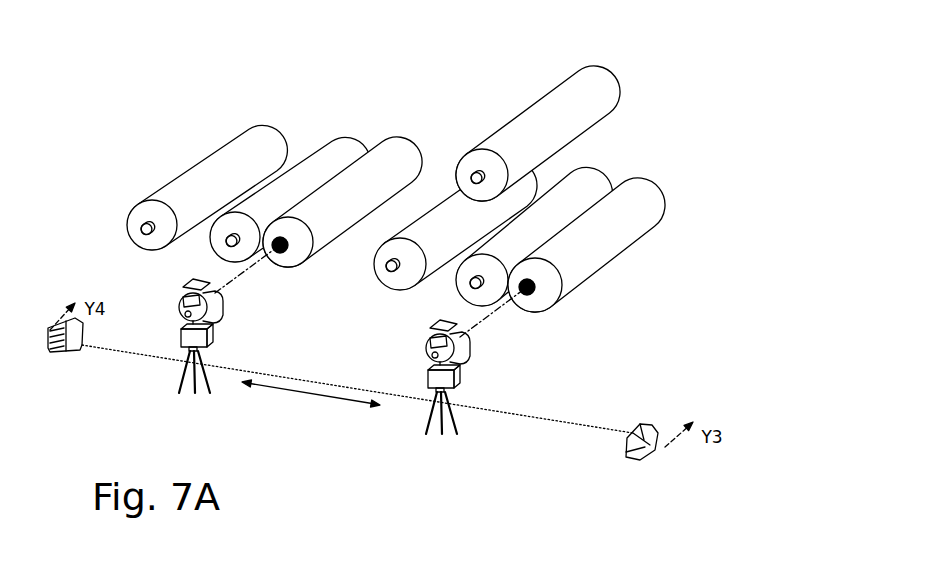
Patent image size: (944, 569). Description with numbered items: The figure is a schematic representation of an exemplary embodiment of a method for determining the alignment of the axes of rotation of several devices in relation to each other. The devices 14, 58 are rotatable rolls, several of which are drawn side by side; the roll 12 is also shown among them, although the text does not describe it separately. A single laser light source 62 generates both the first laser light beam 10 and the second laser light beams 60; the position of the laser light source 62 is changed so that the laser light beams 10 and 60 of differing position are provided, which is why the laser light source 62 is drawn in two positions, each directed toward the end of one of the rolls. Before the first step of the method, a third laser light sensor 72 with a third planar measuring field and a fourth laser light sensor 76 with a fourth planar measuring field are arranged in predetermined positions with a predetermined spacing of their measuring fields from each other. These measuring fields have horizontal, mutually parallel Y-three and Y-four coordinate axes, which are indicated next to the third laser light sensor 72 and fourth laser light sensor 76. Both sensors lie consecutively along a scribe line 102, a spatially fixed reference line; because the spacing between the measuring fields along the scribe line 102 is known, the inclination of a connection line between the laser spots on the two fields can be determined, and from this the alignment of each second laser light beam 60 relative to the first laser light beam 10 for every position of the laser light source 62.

The first laser light beam 10 is at (485, 320).
The roll 12 is at (449, 156).
The device 14 is at (627, 233).
The device 58 is at (397, 148).
The second laser light beam 60 is at (245, 272).
The laser light source 62 is at (221, 346).
The third laser light sensor 72 is at (630, 466).
The fourth laser light sensor 76 is at (50, 366).
The scribe line 102 is at (513, 420).